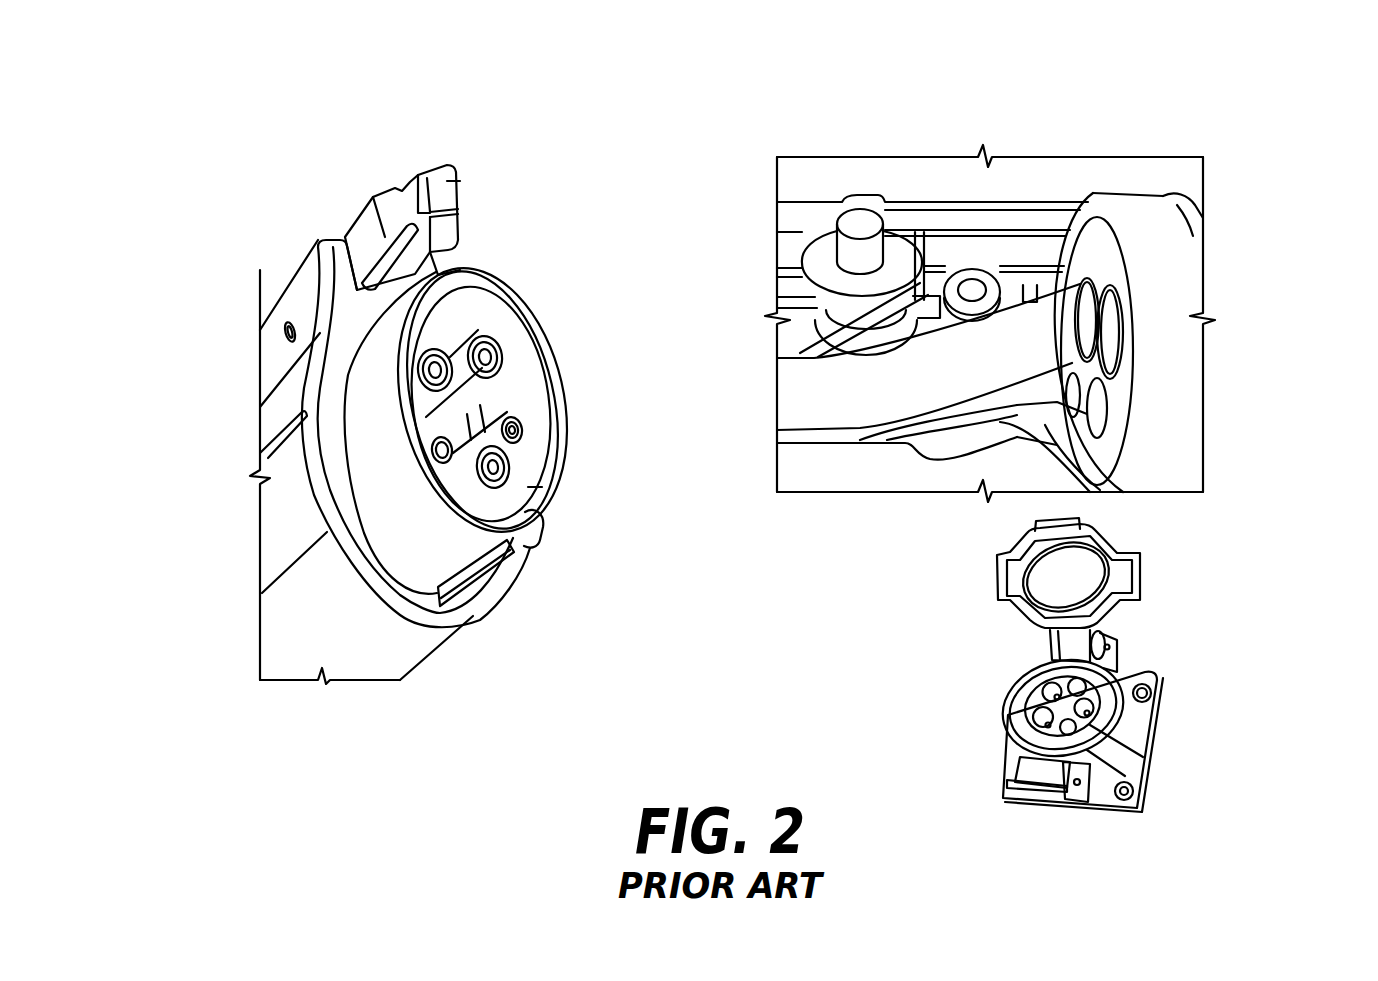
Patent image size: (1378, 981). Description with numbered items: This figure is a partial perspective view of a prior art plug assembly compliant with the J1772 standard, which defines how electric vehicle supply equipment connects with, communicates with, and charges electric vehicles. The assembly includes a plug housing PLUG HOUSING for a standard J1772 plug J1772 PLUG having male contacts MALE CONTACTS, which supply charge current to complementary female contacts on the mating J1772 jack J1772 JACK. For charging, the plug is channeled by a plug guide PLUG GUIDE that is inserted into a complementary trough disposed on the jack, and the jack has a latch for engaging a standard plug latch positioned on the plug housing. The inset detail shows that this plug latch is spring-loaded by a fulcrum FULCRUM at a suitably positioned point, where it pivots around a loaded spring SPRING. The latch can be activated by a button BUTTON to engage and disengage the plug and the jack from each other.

The button BUTTON is at (276, 331).
The male contacts MALE CONTACTS is at (481, 467).
The J1772 plug J1772 PLUG is at (368, 490).
The plug housing PLUG HOUSING is at (318, 613).
The plug guide PLUG GUIDE is at (548, 553).
The fulcrum FULCRUM is at (862, 225).
The spring SPRING is at (929, 297).
The J1772 jack J1772 JACK is at (1138, 683).